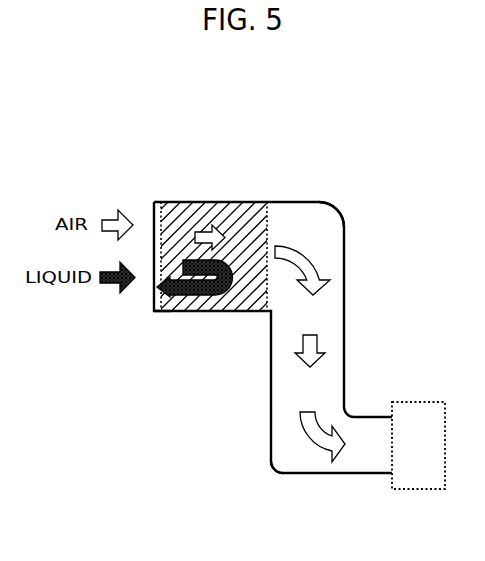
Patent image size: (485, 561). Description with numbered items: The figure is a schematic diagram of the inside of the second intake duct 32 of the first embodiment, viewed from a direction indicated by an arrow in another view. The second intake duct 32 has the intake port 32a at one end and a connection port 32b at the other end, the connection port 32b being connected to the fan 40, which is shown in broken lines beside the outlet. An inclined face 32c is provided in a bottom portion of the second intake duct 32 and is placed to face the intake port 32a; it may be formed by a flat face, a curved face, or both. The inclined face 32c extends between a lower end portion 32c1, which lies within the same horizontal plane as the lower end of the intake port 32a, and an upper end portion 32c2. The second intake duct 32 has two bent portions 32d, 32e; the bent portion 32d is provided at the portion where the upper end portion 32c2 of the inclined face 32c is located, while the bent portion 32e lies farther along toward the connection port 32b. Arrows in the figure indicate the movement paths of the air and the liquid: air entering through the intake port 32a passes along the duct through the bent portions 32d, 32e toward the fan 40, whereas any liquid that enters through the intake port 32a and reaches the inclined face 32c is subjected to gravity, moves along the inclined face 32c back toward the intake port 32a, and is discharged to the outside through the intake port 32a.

The second intake duct 32 is at (253, 200).
The intake port 32a is at (152, 218).
The connection port 32b is at (392, 452).
The inclined face 32c is at (215, 312).
The lower end portion of the inclined face 32c1 is at (162, 314).
The upper end portion of the inclined face 32c2 is at (268, 314).
The bent portion 32d is at (343, 213).
The bent portion 32e is at (275, 478).
The fan 40 is at (420, 466).